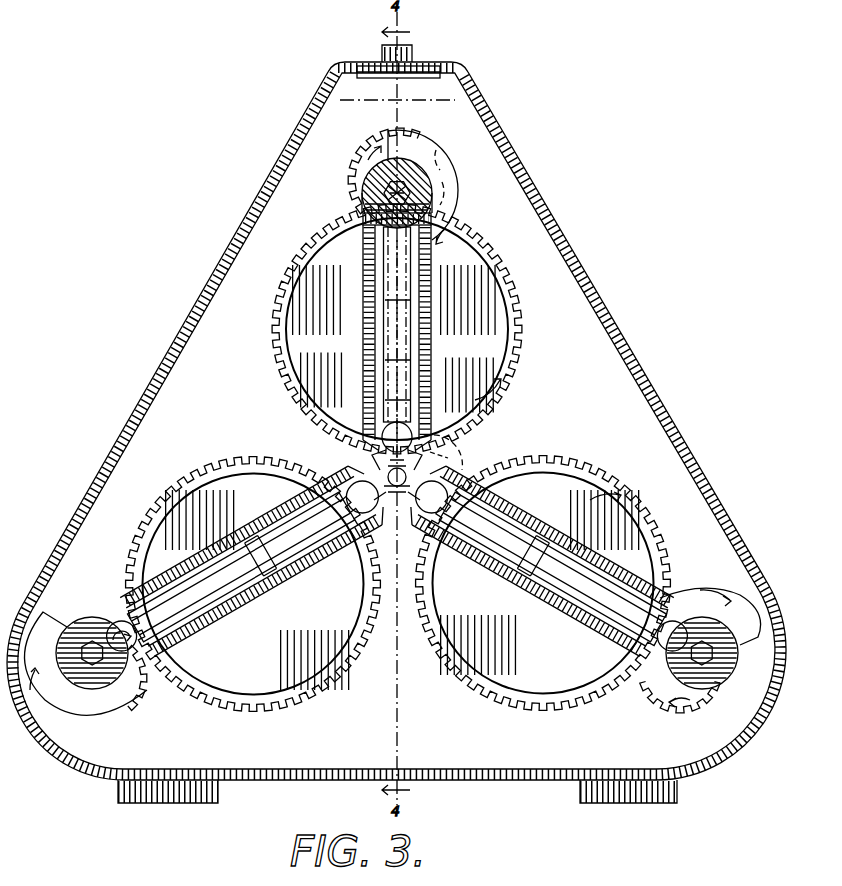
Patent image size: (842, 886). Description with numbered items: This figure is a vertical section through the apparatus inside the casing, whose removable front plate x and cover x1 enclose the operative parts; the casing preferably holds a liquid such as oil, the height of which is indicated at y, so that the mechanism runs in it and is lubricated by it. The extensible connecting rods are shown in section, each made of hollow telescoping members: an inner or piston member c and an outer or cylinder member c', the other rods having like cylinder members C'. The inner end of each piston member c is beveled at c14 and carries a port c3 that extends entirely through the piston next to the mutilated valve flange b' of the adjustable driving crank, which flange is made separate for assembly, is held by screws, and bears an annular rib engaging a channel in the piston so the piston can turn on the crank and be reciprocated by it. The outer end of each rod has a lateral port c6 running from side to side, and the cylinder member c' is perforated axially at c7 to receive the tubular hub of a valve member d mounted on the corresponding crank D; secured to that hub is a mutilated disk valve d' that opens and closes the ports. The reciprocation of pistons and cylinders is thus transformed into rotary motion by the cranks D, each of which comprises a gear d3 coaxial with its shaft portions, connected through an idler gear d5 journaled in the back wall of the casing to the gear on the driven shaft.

The removable front plate x is at (599, 300).
The cover x1 is at (415, 55).
The liquid height y is at (460, 100).
The crank D is at (430, 151).
The gear d3 is at (379, 170).
The valve member d is at (367, 188).
The mutilated disk valve d' is at (426, 193).
The axial perforation c7 is at (432, 196).
The lateral port c6 is at (436, 219).
The cylinder member c' is at (379, 337).
The piston member c is at (421, 324).
The idler gear d5 is at (512, 381).
The port c3 is at (430, 437).
The valve flange b' is at (480, 446).
The bevel c14 is at (386, 458).
The cylinder member C' is at (392, 590).